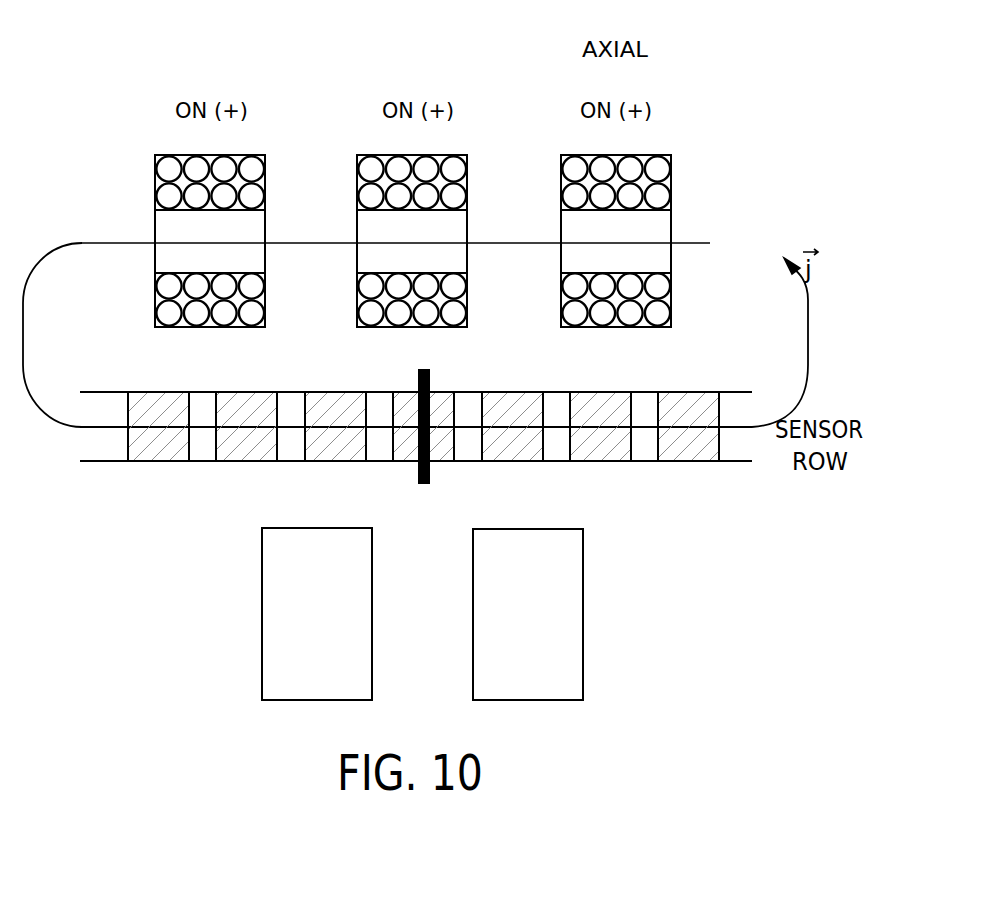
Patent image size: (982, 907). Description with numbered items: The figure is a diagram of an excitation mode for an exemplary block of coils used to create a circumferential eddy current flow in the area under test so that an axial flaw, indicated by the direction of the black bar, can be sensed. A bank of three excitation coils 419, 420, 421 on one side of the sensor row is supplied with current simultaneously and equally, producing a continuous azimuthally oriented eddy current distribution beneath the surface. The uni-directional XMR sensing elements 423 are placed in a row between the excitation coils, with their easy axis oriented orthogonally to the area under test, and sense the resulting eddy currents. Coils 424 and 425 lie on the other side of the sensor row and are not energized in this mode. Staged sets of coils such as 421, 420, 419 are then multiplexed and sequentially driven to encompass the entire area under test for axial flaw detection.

The excitation coil 419 is at (168, 155).
The excitation coil 420 is at (368, 155).
The excitation coil 421 is at (664, 155).
The uni-directional XMR sensors 423 is at (171, 461).
The excitation coil 424 is at (583, 637).
The left processing block 425 is at (262, 580).